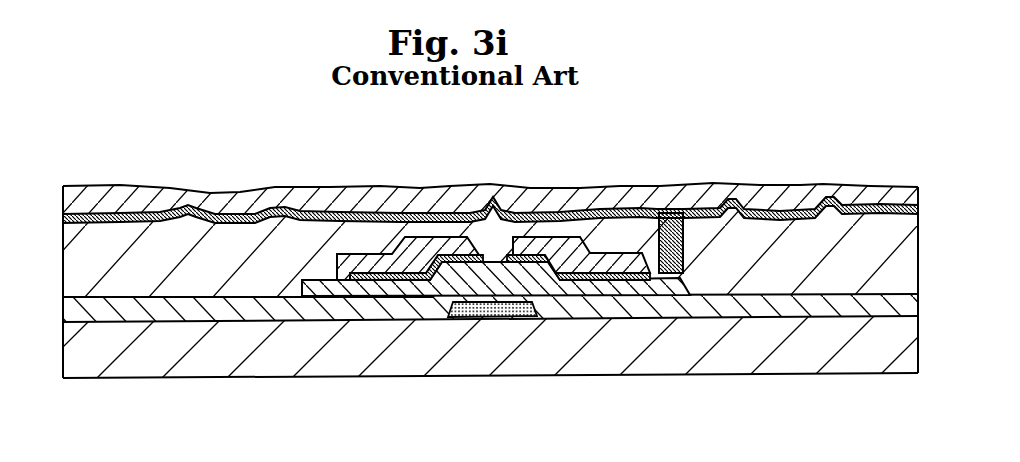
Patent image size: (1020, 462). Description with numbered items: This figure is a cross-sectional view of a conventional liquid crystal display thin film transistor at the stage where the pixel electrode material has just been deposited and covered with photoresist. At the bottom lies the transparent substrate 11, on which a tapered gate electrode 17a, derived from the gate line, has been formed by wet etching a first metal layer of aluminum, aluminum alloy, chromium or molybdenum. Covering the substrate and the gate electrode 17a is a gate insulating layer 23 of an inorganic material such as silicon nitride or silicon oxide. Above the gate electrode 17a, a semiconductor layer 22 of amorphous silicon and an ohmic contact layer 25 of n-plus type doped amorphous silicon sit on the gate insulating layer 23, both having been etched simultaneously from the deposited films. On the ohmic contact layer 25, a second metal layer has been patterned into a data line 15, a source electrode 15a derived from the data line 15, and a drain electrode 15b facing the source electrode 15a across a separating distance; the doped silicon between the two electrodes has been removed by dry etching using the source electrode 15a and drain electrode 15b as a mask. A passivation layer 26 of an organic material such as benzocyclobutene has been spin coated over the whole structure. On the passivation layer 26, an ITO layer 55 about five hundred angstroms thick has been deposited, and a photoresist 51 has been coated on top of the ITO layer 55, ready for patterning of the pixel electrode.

The transparent substrate 11 is at (864, 358).
The gate electrode 17a is at (498, 322).
The semiconductor layer 22 is at (394, 323).
The gate insulating layer 23 is at (168, 323).
The data line 15 is at (314, 281).
The source electrode 15a is at (441, 236).
The drain electrode 15b is at (546, 253).
The ohmic contact layer 25 is at (609, 255).
The passivation layer 26 is at (141, 240).
The ITO layer 55 is at (215, 213).
The photoresist 51 is at (880, 187).